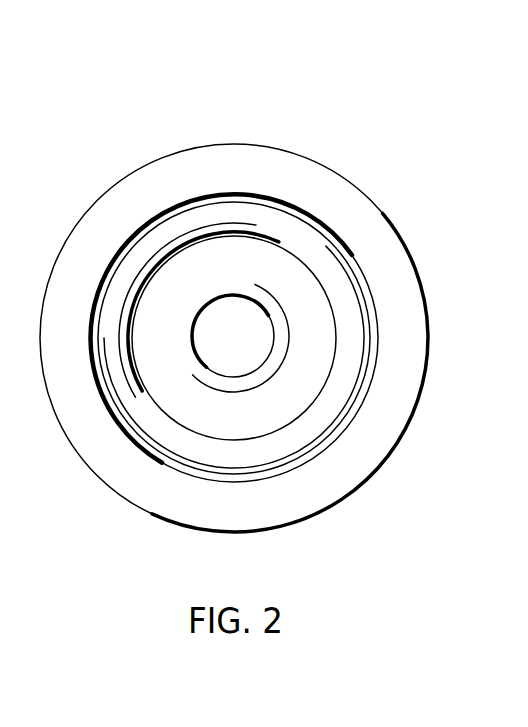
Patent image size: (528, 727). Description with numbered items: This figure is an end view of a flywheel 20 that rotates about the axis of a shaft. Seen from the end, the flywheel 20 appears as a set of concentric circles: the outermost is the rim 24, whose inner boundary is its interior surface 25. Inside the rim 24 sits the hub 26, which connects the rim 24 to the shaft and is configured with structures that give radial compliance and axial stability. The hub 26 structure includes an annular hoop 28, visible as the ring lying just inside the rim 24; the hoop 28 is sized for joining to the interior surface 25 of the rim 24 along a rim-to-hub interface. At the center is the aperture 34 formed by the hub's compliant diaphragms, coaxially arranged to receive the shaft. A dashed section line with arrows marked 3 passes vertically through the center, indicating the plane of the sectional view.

The section line 3- 3 is at (0, 335).
The flywheel 20 is at (346, 160).
The rim 24 is at (421, 287).
The interior surface 25 is at (362, 388).
The hub 26 is at (360, 268).
The annular hoop 28 is at (302, 220).
The aperture 34 is at (210, 318).